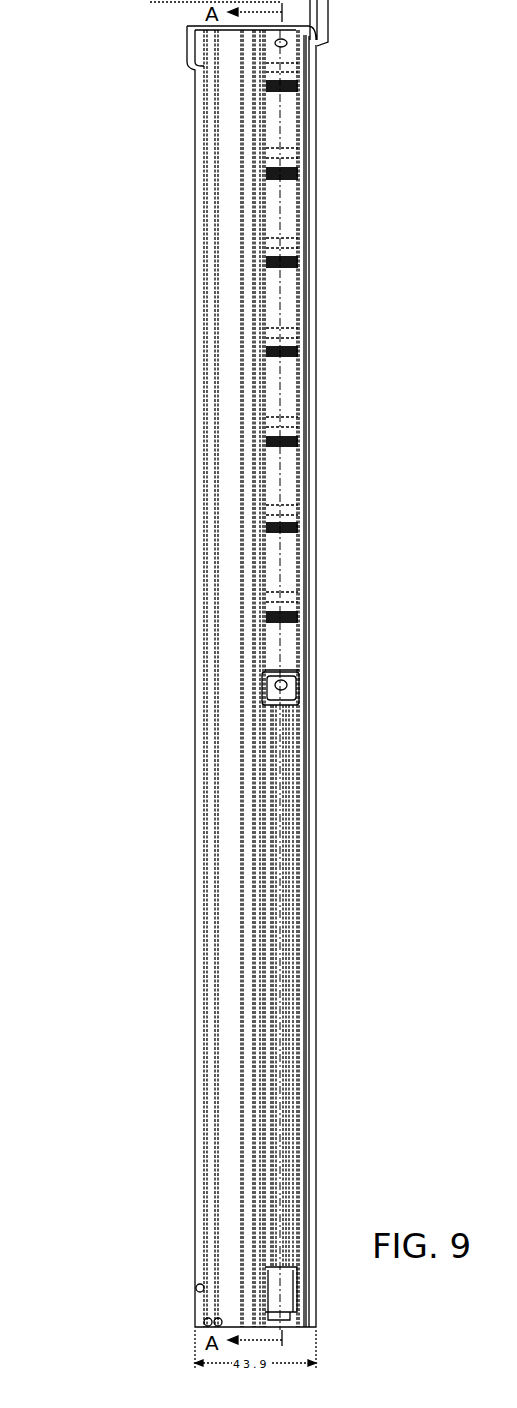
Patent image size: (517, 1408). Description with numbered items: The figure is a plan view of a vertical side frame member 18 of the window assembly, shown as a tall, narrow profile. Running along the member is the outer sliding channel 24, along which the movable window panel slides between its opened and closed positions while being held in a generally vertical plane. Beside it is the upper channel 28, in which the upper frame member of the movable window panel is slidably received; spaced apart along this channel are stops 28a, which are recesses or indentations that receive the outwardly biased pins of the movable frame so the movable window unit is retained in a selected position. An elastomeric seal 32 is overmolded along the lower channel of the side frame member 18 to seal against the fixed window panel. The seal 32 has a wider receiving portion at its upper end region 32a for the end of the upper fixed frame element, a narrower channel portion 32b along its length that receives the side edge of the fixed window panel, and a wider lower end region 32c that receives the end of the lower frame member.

The side frame member 18 is at (155, 262).
The outer sliding channel 24 is at (227, 512).
The upper channel 28 is at (283, 297).
The stops 28a is at (282, 263).
The elastomeric seal 32 is at (265, 1012).
The upper end region 32a is at (282, 697).
The narrower channel portion 32b is at (285, 905).
The lower end region 32c is at (288, 1288).